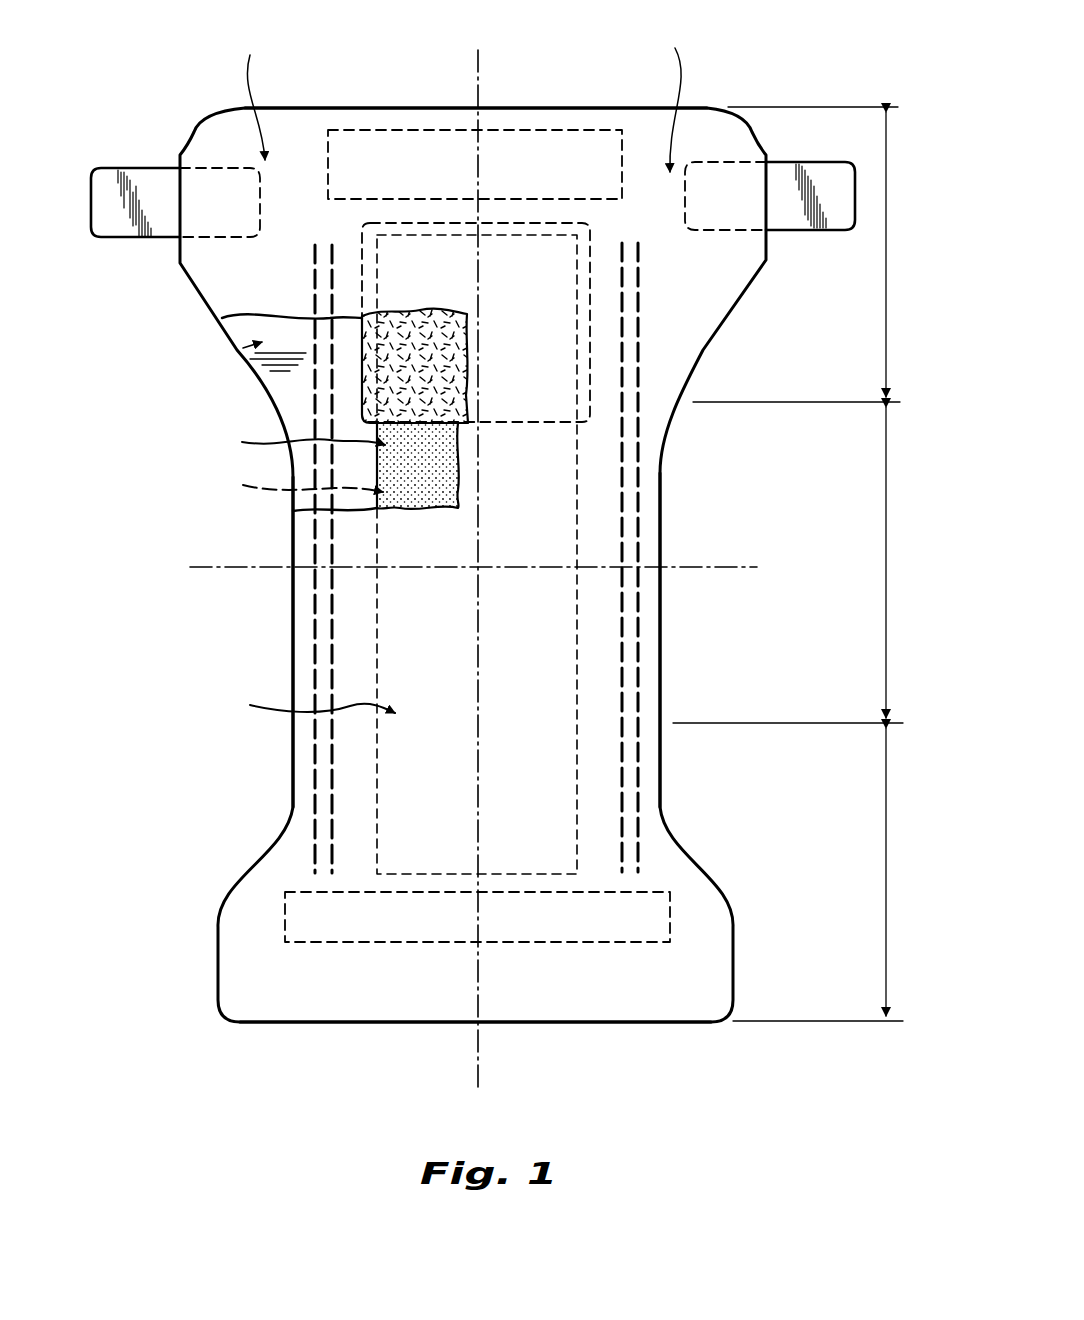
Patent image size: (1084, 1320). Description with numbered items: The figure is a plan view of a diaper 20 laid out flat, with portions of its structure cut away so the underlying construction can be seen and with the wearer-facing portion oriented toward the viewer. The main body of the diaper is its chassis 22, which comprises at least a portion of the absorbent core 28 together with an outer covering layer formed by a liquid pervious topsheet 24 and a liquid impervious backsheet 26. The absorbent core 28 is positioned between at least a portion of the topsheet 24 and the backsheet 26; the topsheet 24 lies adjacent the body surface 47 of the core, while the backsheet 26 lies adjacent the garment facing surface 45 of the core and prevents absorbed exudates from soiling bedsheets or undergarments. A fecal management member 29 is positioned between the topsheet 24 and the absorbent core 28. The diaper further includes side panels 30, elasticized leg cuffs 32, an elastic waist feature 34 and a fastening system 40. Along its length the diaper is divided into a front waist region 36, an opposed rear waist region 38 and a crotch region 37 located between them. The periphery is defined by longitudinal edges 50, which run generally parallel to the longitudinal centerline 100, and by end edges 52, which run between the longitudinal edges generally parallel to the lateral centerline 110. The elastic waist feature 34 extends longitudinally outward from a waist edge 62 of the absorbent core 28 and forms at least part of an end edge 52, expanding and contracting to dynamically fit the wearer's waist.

The diaper 20 is at (782, 78).
The chassis 22 is at (552, 646).
The topsheet 24 is at (306, 614).
The backsheet 26 is at (243, 348).
The absorbent core 28 is at (436, 478).
The fecal management member 29 is at (440, 372).
The side panels 30 is at (464, 98).
The elasticized leg cuffs 32 is at (638, 447).
The elastic waist feature 34 is at (528, 160).
The front waist region 36 is at (828, 874).
The crotch region 37 is at (800, 565).
The rear waist region 38 is at (810, 254).
The fastening system 40 is at (147, 187).
The garment facing surface 45 is at (298, 480).
The body surface 47 is at (299, 438).
The longitudinal edges 50 is at (293, 757).
The end edges 52 is at (355, 108).
The waist edge 62 is at (445, 225).
The longitudinal centerline 100 is at (483, 1048).
The lateral centerline 110 is at (687, 567).